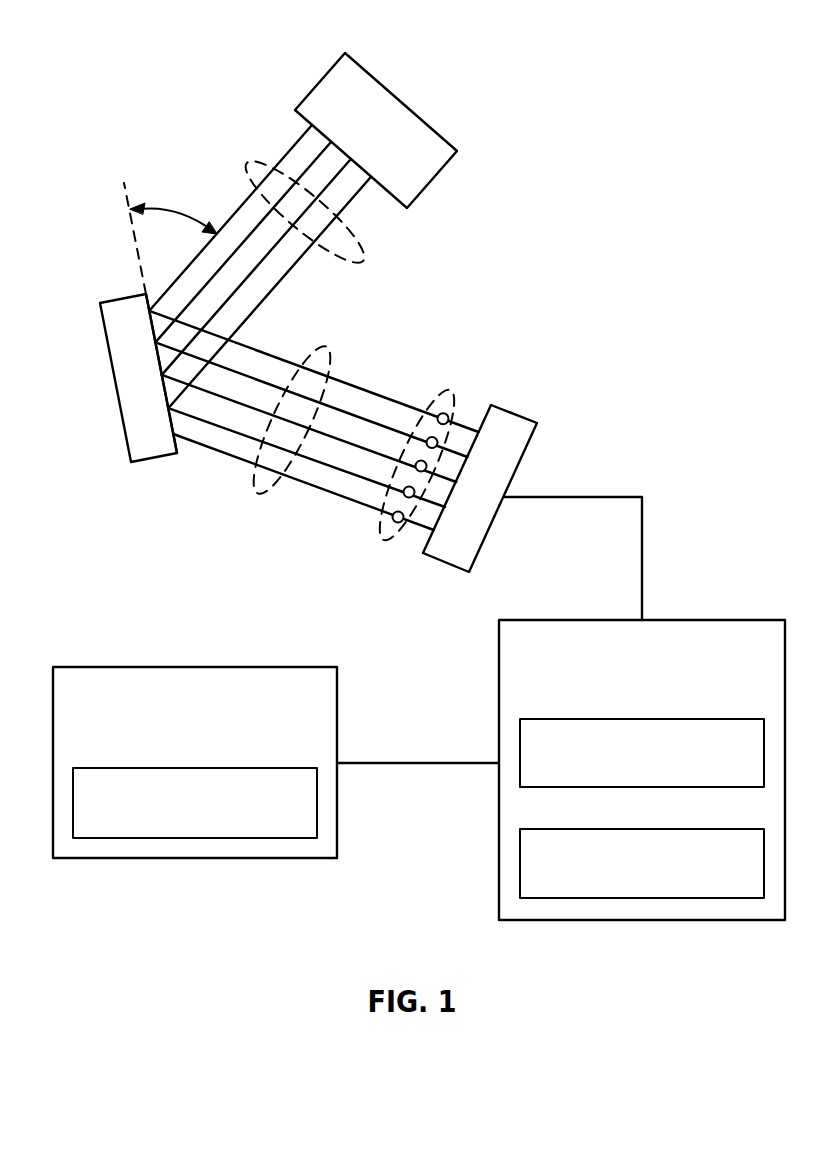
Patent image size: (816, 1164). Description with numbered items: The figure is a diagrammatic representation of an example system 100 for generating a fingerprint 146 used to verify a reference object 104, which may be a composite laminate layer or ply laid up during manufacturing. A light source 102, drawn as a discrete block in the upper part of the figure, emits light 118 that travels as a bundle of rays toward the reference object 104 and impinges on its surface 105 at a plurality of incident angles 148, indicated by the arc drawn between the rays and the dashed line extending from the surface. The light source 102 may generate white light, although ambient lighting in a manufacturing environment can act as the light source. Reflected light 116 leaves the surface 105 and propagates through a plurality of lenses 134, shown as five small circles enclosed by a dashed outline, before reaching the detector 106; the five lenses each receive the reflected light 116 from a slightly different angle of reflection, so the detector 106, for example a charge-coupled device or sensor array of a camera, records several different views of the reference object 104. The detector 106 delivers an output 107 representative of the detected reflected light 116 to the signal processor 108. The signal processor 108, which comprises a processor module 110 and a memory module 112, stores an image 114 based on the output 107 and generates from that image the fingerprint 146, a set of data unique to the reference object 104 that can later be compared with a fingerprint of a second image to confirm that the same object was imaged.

The system 100 is at (592, 63).
The light source 102 is at (319, 82).
The reference object 104 is at (110, 385).
The surface 105 is at (177, 457).
The detector 106 is at (531, 444).
The output 107 is at (642, 495).
The signal processor 108 is at (570, 620).
The processor module 110 is at (590, 719).
The memory module 112 is at (590, 829).
The image 114 is at (120, 667).
The reflected light 116 is at (327, 348).
The light 118 is at (362, 261).
The plurality of lenses 134 is at (452, 390).
The fingerprint 146 is at (145, 768).
The incident angles 148 is at (172, 208).